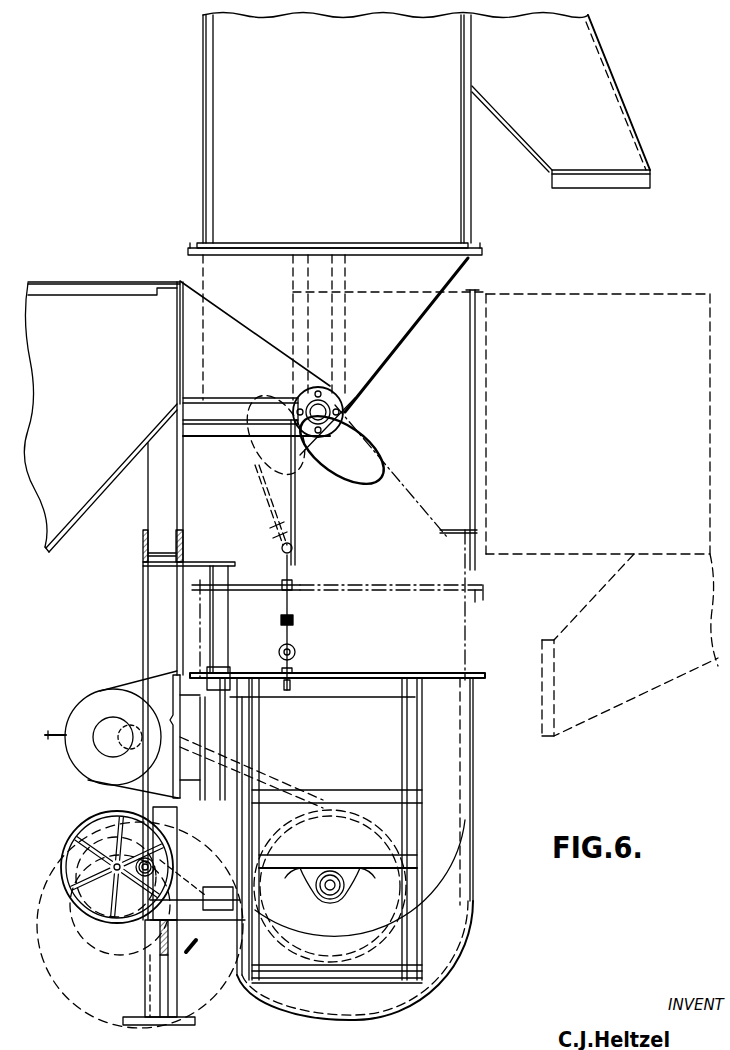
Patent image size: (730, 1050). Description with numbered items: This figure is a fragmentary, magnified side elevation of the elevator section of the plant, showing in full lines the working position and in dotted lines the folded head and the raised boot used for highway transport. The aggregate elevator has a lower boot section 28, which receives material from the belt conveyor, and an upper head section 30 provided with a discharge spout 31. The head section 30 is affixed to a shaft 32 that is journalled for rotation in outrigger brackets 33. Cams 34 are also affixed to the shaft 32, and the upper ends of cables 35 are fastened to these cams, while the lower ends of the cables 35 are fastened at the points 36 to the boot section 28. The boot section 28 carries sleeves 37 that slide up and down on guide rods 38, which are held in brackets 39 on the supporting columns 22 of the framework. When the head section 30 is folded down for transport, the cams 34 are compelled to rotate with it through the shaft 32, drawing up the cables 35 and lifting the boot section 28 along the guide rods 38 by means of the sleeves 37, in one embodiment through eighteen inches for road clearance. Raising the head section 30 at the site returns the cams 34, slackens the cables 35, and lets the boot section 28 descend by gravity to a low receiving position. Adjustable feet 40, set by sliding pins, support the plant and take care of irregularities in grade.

The supporting columns 22 is at (160, 498).
The boot section 28 is at (425, 588).
The head section 30 is at (340, 154).
The discharge spout 31 is at (626, 142).
The shaft 32 is at (333, 400).
The outrigger brackets 33 is at (232, 332).
The cams 34 is at (368, 433).
The cables 35 is at (291, 510).
The points 36 is at (295, 655).
The sleeves 37 is at (230, 669).
The guide rods 38 is at (222, 636).
The brackets 39 is at (233, 560).
The adjustable feet 40 is at (185, 1025).